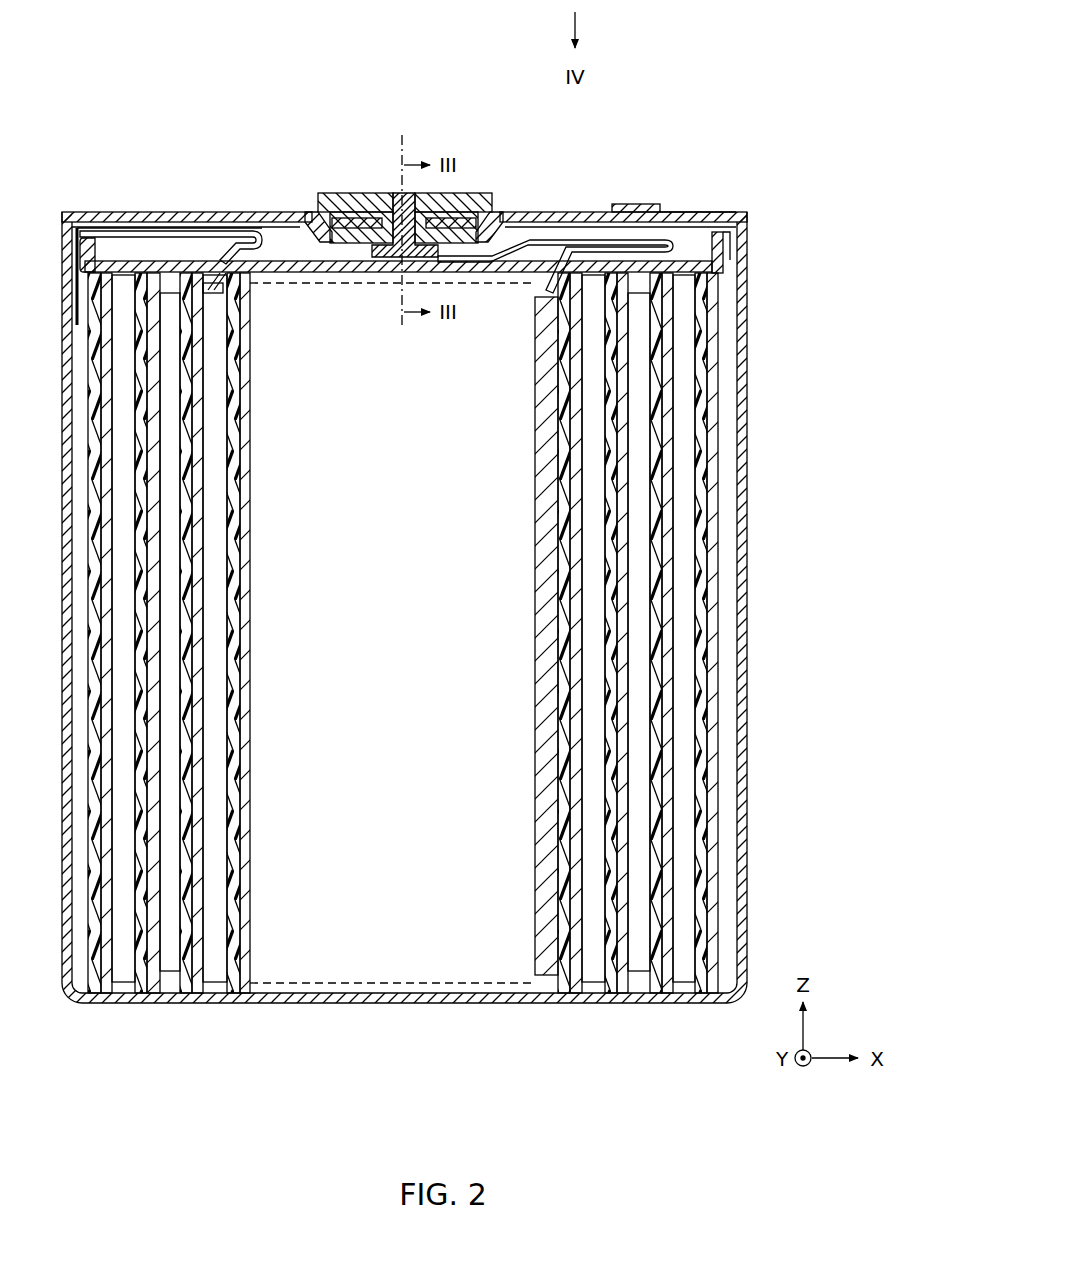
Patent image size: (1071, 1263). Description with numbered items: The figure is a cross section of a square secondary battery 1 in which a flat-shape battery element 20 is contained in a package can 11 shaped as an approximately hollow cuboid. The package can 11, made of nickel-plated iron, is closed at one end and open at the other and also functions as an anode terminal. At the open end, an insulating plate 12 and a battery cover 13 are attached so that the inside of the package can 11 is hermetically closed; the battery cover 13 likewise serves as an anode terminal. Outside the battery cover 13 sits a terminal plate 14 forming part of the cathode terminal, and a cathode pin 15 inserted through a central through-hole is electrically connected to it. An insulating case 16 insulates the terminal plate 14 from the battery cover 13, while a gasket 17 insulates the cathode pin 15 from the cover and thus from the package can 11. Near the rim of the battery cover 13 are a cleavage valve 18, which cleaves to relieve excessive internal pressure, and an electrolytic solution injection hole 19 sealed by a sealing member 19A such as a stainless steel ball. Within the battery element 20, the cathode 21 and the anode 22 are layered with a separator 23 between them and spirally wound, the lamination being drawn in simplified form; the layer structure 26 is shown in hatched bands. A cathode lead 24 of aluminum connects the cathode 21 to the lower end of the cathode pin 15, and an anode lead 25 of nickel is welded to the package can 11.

The secondary battery 1 is at (780, 50).
The package can 11 is at (748, 312).
The insulating plate 12 is at (738, 243).
The battery cover 13 is at (86, 212).
The terminal plate 14 is at (335, 194).
The cathode pin 15 is at (406, 192).
The insulating case 16 is at (470, 194).
The gasket 17 is at (515, 248).
The cleavage valve 18 is at (232, 231).
The electrolytic solution injection hole 19 is at (692, 212).
The sealing member 19A is at (632, 205).
The battery element 20 is at (447, 666).
The cathode 21 is at (127, 962).
The anode 22 is at (215, 960).
The separator 23 is at (188, 408).
The cathode lead 24 is at (724, 238).
The anode lead 25 is at (134, 232).
The current collector 26 is at (232, 497).